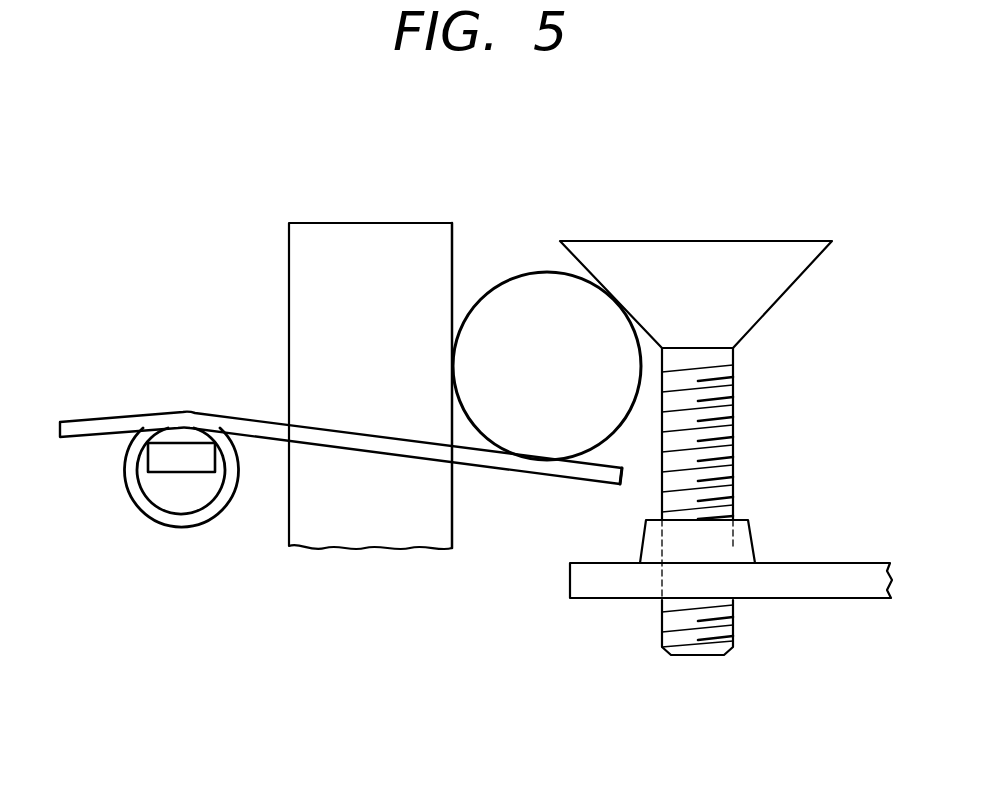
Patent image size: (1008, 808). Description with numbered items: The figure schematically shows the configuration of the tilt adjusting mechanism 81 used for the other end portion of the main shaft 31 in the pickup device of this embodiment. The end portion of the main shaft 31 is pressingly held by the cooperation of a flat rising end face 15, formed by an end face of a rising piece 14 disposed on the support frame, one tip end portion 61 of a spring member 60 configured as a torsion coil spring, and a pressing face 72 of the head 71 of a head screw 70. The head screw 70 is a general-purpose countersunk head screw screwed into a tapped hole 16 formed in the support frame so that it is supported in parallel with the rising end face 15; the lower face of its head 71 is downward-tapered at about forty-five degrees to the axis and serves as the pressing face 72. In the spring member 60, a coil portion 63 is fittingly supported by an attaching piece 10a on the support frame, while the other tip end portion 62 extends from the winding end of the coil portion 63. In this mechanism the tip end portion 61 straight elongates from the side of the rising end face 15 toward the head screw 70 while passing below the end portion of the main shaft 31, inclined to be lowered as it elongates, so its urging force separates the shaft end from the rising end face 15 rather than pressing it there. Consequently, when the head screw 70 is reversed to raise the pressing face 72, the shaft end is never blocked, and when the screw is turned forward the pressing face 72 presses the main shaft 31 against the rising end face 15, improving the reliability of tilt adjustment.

The rising piece 14 is at (358, 235).
The rising end face 15 is at (455, 262).
The main shaft 31 is at (532, 287).
The head screw 70 is at (735, 376).
The head 71 is at (719, 241).
The pressing face 72 is at (615, 300).
The tapped hole 16 is at (733, 548).
The spring member 60 is at (331, 415).
The tip end portion 61 is at (600, 482).
The other tip end portion 62 is at (97, 427).
The coil portion 63 is at (128, 483).
The attaching piece 10a is at (180, 465).
The tilt adjusting mechanism 81 is at (512, 560).